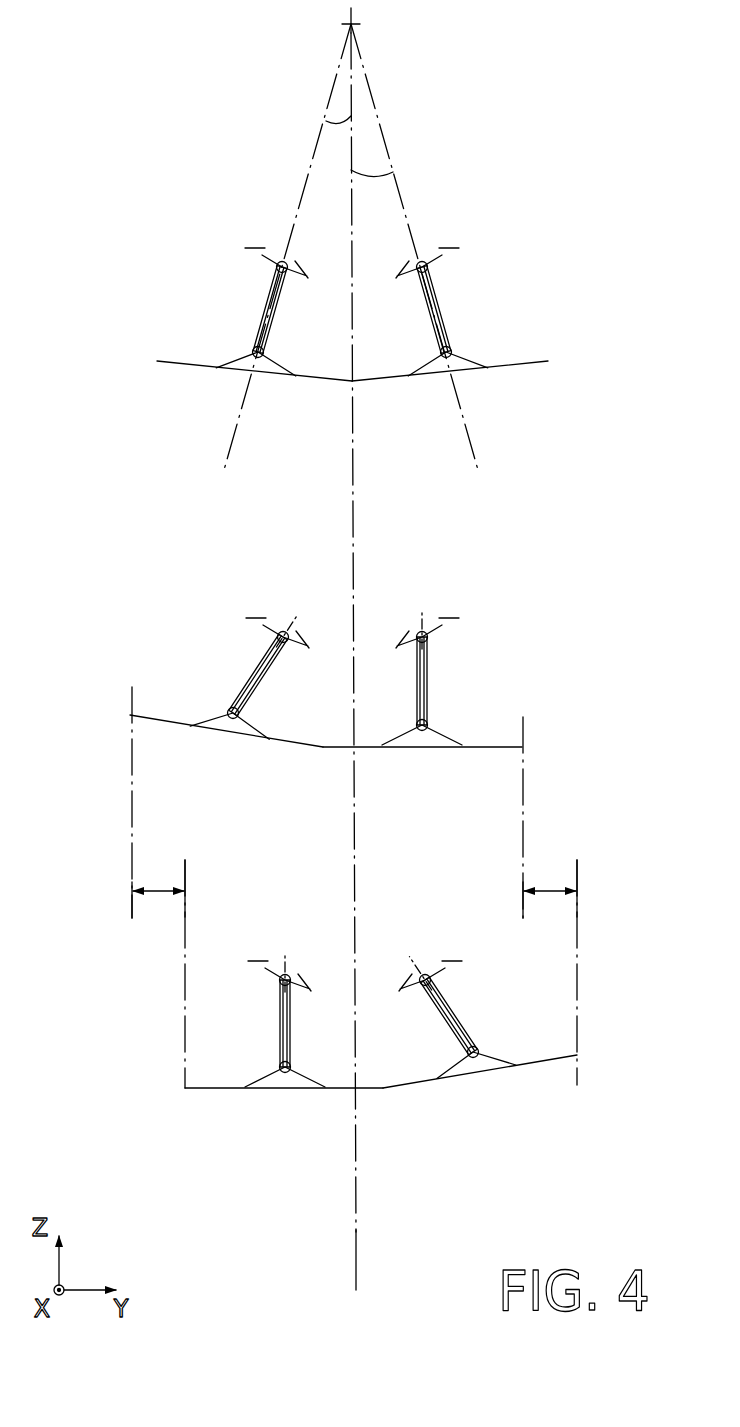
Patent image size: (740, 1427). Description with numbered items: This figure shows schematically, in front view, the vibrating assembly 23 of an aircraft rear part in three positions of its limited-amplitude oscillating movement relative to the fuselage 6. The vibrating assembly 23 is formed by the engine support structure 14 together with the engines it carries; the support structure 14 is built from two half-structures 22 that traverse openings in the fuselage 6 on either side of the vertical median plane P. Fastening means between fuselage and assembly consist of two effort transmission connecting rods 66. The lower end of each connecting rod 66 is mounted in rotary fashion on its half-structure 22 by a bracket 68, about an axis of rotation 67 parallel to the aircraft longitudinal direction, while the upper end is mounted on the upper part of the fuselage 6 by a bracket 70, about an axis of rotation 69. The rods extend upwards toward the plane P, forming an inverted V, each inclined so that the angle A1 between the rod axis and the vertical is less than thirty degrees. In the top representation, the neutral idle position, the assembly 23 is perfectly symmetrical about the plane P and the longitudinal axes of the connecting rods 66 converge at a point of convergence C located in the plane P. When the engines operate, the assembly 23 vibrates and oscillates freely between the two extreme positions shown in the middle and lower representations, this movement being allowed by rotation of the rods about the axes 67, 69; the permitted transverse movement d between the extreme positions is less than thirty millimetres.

The fuselage 6 is at (353, 667).
The support structure 14 is at (368, 389).
The support half-structure 22 is at (334, 741).
The vibrating assembly 23 is at (181, 374).
The effort transmission connecting rod 66 is at (265, 308).
The axis of rotation 67 is at (265, 348).
The bracket 68 is at (268, 374).
The axis of rotation 69 is at (276, 268).
The bracket 70 is at (302, 256).
The point of convergence C is at (360, 24).
The angle A1 is at (326, 121).
The permitted movement d is at (157, 889).
The vertical median plane P is at (356, 1261).